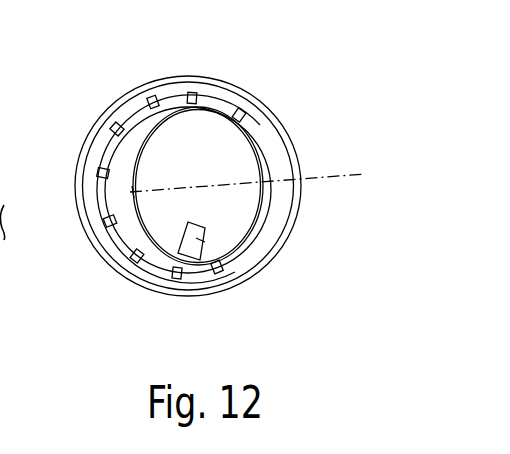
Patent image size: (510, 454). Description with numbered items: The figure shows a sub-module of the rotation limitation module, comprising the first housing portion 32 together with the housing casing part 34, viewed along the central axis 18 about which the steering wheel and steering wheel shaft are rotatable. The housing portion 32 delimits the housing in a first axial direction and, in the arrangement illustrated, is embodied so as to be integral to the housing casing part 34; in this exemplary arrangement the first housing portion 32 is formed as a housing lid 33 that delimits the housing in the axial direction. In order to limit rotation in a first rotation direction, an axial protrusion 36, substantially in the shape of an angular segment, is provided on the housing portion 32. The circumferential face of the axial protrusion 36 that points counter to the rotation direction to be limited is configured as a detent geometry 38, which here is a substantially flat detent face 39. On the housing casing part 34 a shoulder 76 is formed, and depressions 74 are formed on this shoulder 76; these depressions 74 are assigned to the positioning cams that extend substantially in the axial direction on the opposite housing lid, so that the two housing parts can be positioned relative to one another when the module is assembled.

The central axis 18 is at (338, 170).
The first housing portion 32 is at (274, 186).
The housing lid 33 is at (230, 198).
The housing casing part 34 is at (267, 124).
The axial protrusion 36 is at (203, 237).
The detent geometry 38 is at (296, 246).
The detent face 39 is at (210, 241).
The depressions 74 is at (190, 96).
The shoulder 76 is at (191, 209).